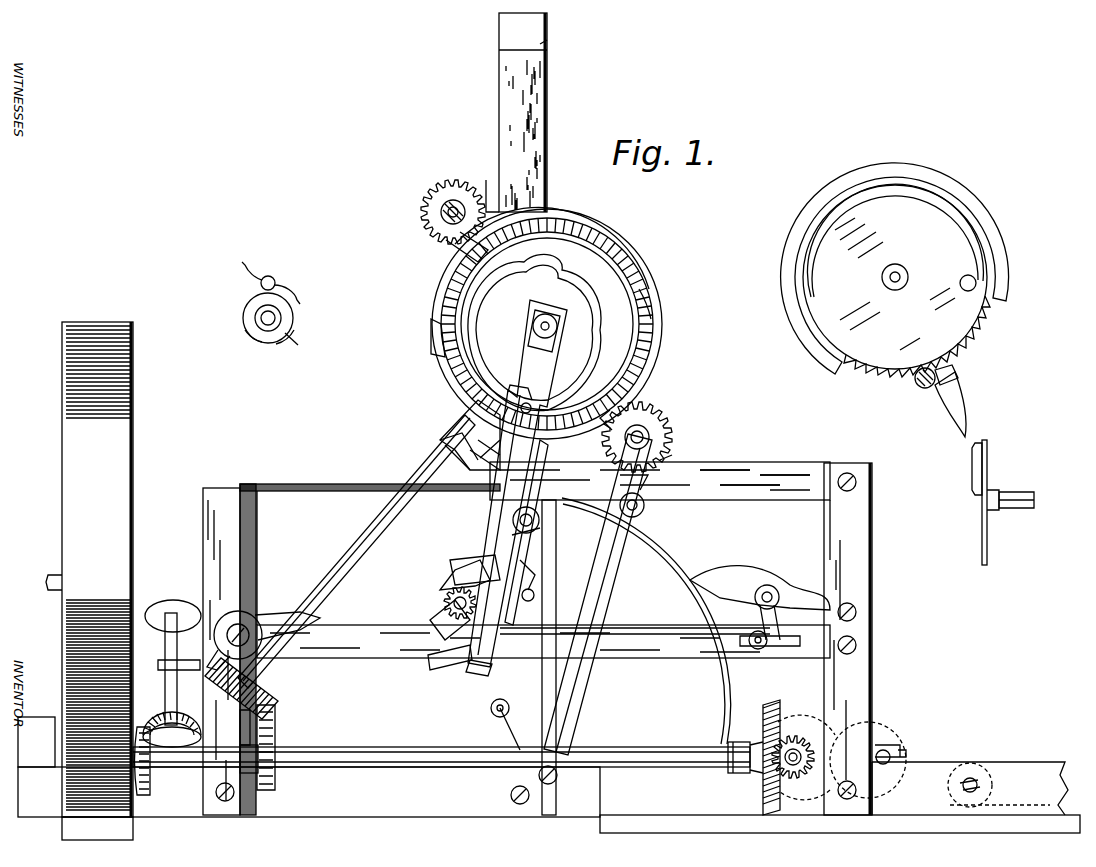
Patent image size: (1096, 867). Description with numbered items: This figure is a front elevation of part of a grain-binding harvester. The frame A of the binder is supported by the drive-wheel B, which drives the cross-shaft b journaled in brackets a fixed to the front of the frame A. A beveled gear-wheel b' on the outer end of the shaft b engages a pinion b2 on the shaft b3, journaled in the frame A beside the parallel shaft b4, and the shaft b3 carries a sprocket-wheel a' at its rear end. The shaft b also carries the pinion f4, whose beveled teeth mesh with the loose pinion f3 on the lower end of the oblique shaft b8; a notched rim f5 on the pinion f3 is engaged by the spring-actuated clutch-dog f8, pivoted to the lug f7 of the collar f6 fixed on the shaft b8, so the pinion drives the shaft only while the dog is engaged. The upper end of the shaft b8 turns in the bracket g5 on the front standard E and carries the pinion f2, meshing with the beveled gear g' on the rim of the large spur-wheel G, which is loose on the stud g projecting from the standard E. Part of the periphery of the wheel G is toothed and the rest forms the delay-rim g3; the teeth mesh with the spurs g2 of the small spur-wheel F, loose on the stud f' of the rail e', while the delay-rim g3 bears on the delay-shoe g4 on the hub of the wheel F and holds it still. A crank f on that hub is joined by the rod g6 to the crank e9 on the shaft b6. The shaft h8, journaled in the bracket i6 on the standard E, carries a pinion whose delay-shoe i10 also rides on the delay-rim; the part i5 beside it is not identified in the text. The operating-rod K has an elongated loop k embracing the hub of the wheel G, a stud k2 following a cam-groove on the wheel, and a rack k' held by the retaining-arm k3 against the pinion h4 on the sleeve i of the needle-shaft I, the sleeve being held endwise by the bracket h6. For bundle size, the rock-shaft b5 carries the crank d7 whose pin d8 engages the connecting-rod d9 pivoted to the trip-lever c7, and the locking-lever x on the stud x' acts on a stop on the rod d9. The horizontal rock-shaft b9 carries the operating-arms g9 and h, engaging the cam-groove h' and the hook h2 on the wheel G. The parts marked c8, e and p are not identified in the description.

The frame A is at (549, 647).
The drive-wheel B is at (75, 581).
The front standard E is at (523, 112).
The small spur-wheel F is at (645, 437).
The large spur-wheel G is at (675, 352).
The needle-shaft I is at (455, 580).
The operating-rod K is at (496, 525).
The brackets a is at (726, 748).
The sprocket-wheel a' is at (499, 774).
The cross-shaft b is at (441, 740).
The beveled gear-wheel b' is at (766, 745).
The pinion b2 is at (805, 745).
The shaft b3 is at (806, 758).
The shaft b4 is at (888, 752).
The rock-shaft b5 is at (755, 592).
The shaft b6 is at (495, 702).
The oblique shaft b8 is at (400, 520).
The horizontal rock-shaft b9 is at (920, 386).
The trip-lever c7 is at (250, 618).
The curved arm c8 is at (690, 562).
The crank d7 is at (760, 620).
The stud or pin d8 is at (775, 638).
The connecting-rod d9 is at (655, 630).
The post top e is at (554, 33).
The rail e' is at (755, 481).
The crank e9 is at (510, 730).
The crank f is at (634, 477).
The stud f' is at (637, 412).
The pinion f2 is at (468, 410).
The pinion f3 is at (173, 662).
The pinion f4 is at (258, 790).
The rim f5 is at (275, 718).
The collar f6 is at (268, 684).
The lug f7 is at (278, 700).
The clutch-dog f8 is at (297, 298).
The stud g is at (534, 332).
The beveled gear g' is at (658, 298).
The spurs g2 is at (665, 460).
The delay-rim g3 is at (640, 255).
The pinion hub g4 is at (630, 433).
The bracket g5 is at (485, 455).
The rod g6 is at (598, 594).
The operating-arm g9 is at (880, 372).
The operating-arm h is at (967, 468).
The cam-groove h' is at (895, 264).
The hook h2 is at (955, 378).
The pinion h4 is at (447, 603).
The bracket h6 is at (431, 335).
The shaft h8 is at (445, 218).
The sleeve i is at (470, 565).
The gear i5 is at (441, 212).
The bracket i6 is at (486, 182).
The delay-shoe i10 is at (450, 250).
The elongated loop k is at (544, 343).
The rack k' is at (469, 678).
The stud k2 is at (526, 403).
The retaining-arm k3 is at (445, 665).
The pin p is at (532, 595).
The locking-lever x is at (539, 517).
The stud x' is at (537, 538).